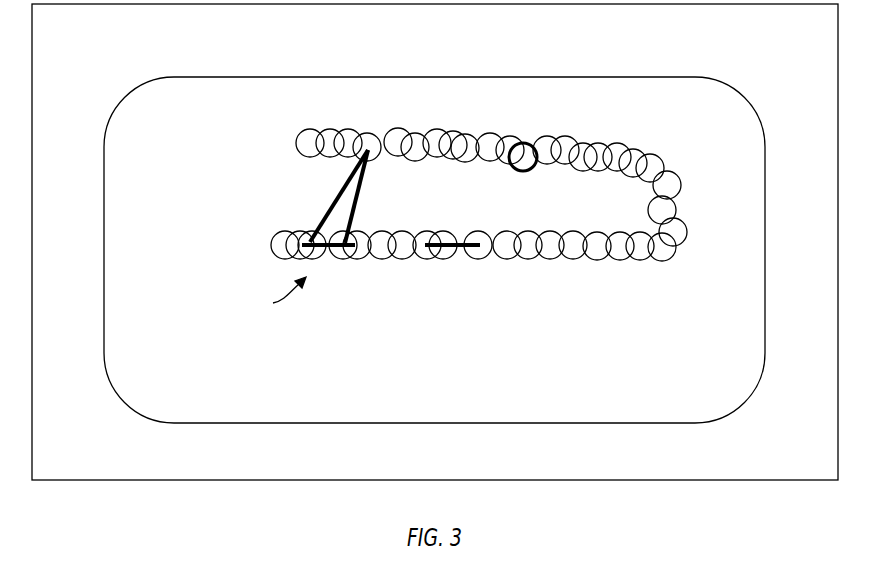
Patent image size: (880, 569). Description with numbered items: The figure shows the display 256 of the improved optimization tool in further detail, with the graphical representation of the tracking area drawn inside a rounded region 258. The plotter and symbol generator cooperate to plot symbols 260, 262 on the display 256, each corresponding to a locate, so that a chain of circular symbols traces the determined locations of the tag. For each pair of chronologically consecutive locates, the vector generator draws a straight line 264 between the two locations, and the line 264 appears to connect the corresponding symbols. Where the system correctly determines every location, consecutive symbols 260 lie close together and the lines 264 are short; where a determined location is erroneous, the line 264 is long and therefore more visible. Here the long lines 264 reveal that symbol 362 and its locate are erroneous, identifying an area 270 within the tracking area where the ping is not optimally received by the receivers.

The display 256 is at (150, 37).
The rounded rectangular region of display 258 is at (743, 97).
The symbols 260 is at (361, 126).
The symbol 262 is at (527, 141).
The straight line 264 is at (353, 198).
The symbol 362 is at (366, 231).
The area 270 is at (269, 296).